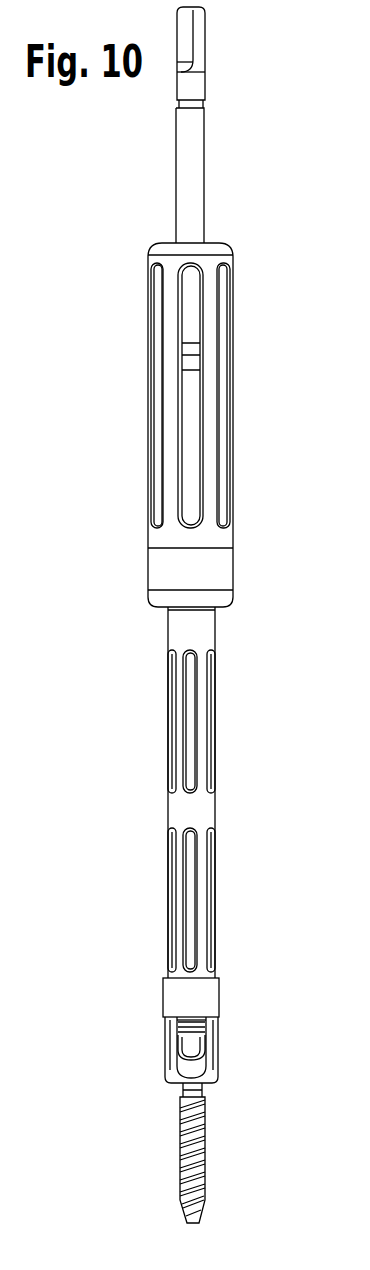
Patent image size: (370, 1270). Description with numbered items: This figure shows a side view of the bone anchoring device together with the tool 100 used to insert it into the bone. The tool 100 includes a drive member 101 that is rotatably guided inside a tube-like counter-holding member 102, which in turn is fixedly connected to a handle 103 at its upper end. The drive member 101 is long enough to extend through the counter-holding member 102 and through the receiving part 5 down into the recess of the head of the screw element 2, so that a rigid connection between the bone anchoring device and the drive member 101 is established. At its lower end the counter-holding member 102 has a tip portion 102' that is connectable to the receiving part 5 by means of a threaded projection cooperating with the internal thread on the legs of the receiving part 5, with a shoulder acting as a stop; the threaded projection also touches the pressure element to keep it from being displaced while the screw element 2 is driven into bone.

The tool 100 is at (145, 340).
The drive member 101 is at (197, 183).
The counter-holding member 102 is at (236, 792).
The tip portion of the counter-holding member 102' is at (240, 1030).
The handle 103 is at (222, 538).
The receiving part 5 is at (218, 1047).
The screw element 2 is at (207, 1138).